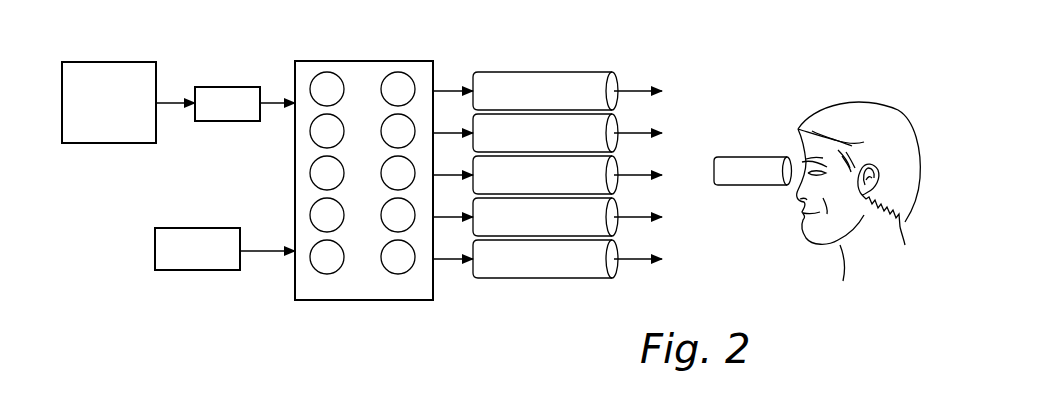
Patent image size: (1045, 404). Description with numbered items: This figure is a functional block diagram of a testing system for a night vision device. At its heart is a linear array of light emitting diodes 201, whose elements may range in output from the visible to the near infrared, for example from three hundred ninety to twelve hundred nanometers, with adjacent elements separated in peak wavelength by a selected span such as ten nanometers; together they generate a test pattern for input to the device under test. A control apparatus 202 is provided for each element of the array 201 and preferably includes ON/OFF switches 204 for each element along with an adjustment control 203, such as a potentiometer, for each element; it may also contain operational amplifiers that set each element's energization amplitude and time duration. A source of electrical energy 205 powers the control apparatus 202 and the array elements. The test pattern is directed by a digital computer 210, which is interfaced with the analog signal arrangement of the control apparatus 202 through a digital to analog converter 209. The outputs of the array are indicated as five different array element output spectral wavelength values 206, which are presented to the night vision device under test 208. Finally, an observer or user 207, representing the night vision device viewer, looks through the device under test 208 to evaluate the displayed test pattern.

The linear array of light emitting diodes 201 is at (554, 66).
The control apparatus 202 is at (332, 61).
The adjustment control 203 is at (398, 184).
The ON/OFF switches 204 is at (327, 184).
The source of electrical energy 205 is at (190, 228).
The array element output spectral wavelength values 206 is at (691, 79).
The observer or user 207 is at (898, 150).
The night vision device under test 208 is at (728, 157).
The digital to analog converter 209 is at (232, 87).
The digital computer 210 is at (107, 62).